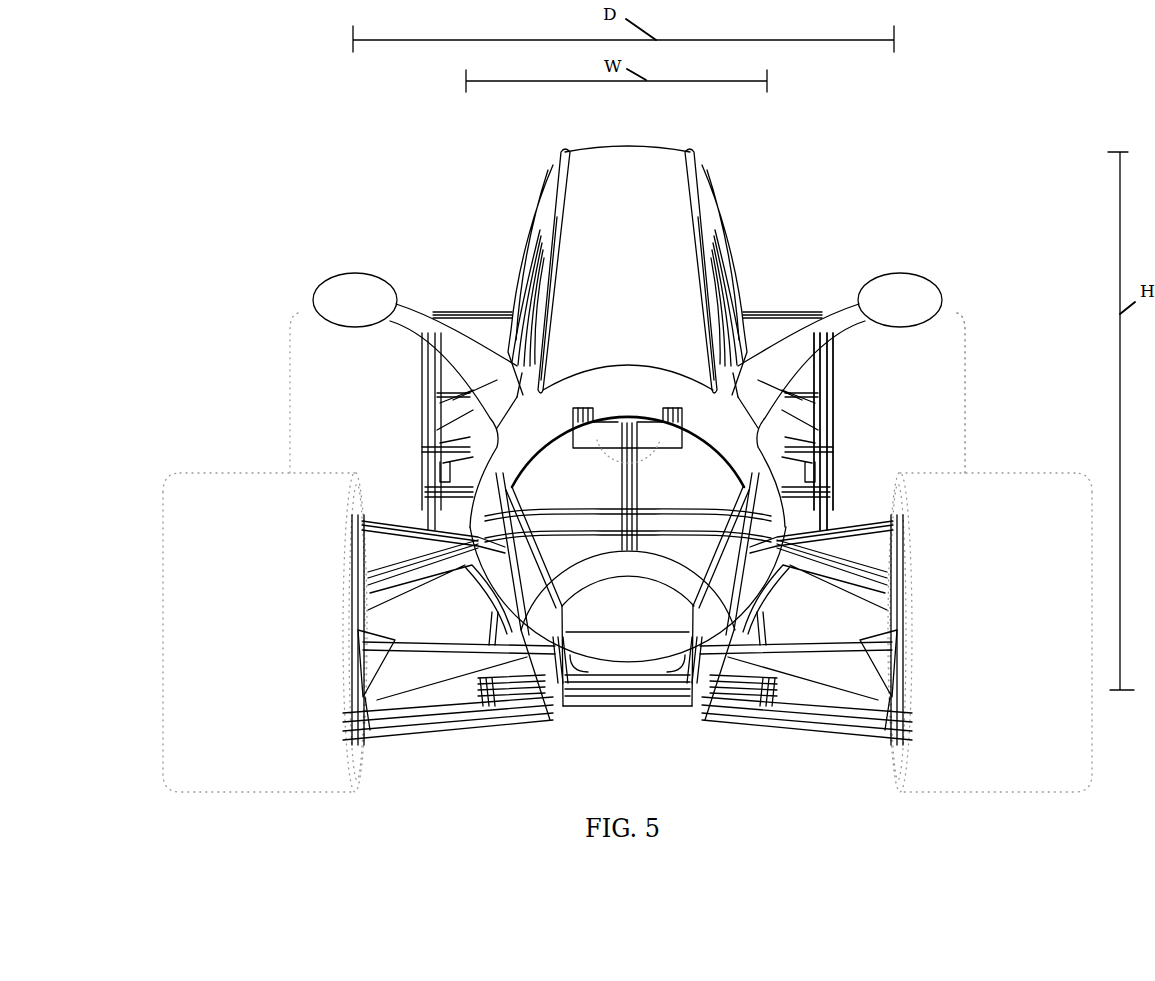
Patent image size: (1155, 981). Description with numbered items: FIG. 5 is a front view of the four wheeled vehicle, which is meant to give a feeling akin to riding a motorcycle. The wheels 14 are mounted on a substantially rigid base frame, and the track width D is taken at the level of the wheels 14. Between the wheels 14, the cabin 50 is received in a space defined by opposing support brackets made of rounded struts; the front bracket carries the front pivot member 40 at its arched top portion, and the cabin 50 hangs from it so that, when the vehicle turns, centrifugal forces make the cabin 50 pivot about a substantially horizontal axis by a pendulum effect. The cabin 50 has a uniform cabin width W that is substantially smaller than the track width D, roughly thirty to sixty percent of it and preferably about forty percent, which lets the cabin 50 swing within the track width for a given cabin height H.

The wheels 14 is at (960, 318).
The front pivot member 40 is at (625, 413).
The cabin 50 is at (561, 152).